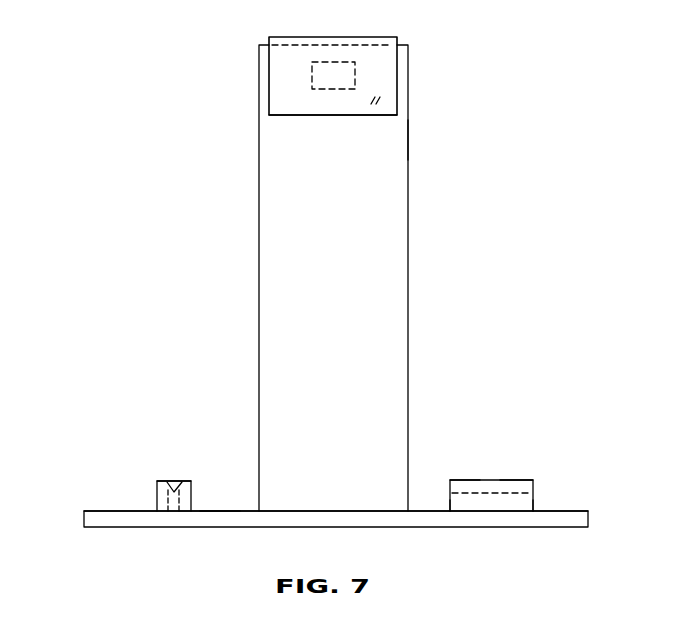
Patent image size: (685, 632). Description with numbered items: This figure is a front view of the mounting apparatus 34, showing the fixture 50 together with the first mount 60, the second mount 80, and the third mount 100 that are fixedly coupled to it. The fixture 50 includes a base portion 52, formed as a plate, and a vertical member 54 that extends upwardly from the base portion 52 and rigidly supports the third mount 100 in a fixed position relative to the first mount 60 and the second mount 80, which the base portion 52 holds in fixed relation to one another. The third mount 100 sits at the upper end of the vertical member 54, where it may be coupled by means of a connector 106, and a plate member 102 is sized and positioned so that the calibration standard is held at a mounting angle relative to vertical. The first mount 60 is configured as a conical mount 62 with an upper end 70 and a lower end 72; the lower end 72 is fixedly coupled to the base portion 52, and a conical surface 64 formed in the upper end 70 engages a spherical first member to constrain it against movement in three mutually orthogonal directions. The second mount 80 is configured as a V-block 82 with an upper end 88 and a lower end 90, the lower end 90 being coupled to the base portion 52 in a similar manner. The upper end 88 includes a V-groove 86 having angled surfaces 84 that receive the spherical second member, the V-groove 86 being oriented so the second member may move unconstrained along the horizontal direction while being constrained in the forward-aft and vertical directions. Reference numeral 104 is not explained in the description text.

The mounting apparatus 34 is at (409, 248).
The fixture 50 is at (588, 527).
The base portion 52 is at (588, 511).
The vertical member 54 is at (409, 157).
The first mount 60 is at (163, 481).
The conical mount 62 is at (162, 489).
The conical surface 64 is at (172, 482).
The upper end 70 is at (187, 480).
The lower end 72 is at (217, 510).
The second mount 80 is at (522, 480).
The V-block 82 is at (533, 503).
The angled surfaces 84 is at (479, 490).
The V-groove 86 is at (510, 480).
The upper end 88 is at (450, 480).
The lower end 90 is at (448, 504).
The third mount 100 is at (387, 84).
The plate member 102 is at (283, 117).
The indicator marks 104 is at (380, 102).
The connector 106 is at (356, 66).